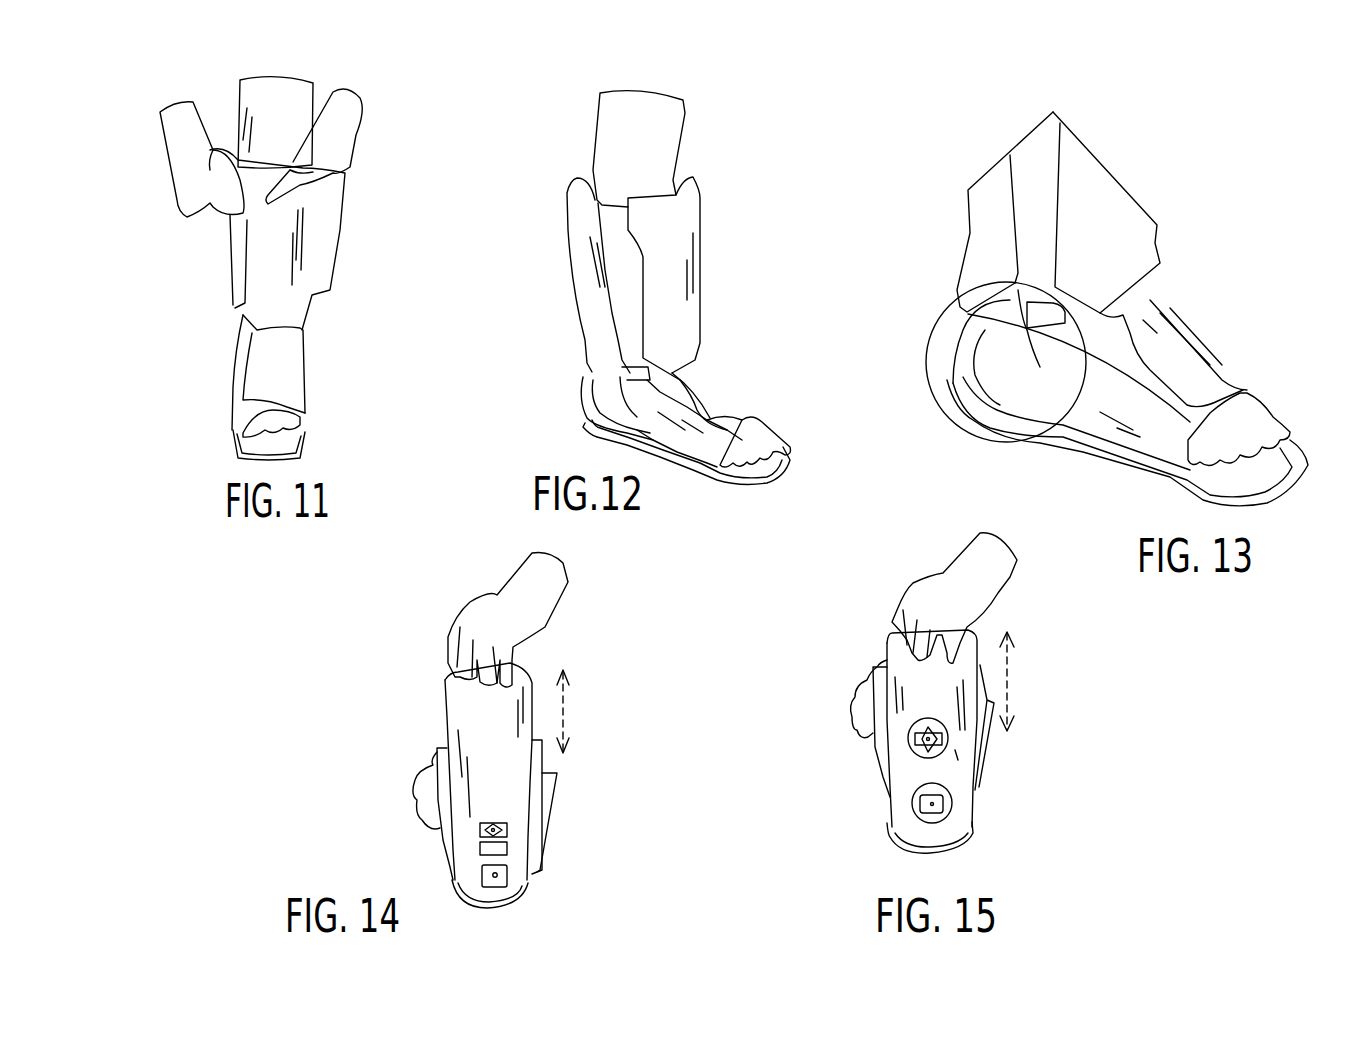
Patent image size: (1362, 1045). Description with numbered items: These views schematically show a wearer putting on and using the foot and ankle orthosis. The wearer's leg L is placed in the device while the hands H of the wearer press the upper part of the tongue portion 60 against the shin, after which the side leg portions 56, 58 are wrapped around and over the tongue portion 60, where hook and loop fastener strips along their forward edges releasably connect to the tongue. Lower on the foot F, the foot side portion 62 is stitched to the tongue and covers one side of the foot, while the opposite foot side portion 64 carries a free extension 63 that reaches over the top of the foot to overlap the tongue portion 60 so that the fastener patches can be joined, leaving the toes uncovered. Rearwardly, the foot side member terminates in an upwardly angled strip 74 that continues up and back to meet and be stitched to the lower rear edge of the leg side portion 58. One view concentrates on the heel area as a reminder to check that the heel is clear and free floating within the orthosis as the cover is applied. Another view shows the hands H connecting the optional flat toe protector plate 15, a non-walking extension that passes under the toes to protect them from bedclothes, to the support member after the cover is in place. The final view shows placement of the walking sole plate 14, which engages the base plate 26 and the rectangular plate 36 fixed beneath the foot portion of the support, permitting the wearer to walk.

In FIG. 11, the leg L is at (300, 105).
In FIG. 12, the leg L is at (647, 148).
In FIG. 13, the leg L is at (1058, 212).
In FIG. 11, the hands H is at (335, 137).
In FIG. 14, the hands H is at (508, 610).
In FIG. 15, the hands H is at (937, 593).
In FIG. 11, the foot F is at (287, 425).
In FIG. 12, the foot F is at (753, 432).
In FIG. 13, the foot F is at (1230, 417).
In FIG. 12, the sole or walker plate 14 is at (593, 420).
In FIG. 13, the sole or walker plate 14 is at (1117, 394).
In FIG. 15, the sole or walker plate 14 is at (893, 735).
In FIG. 14, the flat toe protector plate 15 is at (500, 712).
In FIG. 15, the base plate 26 is at (942, 742).
In FIG. 15, the rectangular plate 36 is at (943, 807).
In FIG. 11, the side leg portion 56 is at (323, 213).
In FIG. 12, the side leg portion 56 is at (688, 200).
In FIG. 11, the side leg portion 58 is at (237, 237).
In FIG. 12, the side leg portion 58 is at (585, 273).
In FIG. 11, the tongue portion 60 is at (287, 268).
In FIG. 12, the foot side portion 62 is at (688, 443).
In FIG. 14, the foot side portion 62 is at (448, 827).
In FIG. 11, the free extension 63 is at (275, 357).
In FIG. 12, the free extension 63 is at (710, 407).
In FIG. 13, the free extension 63 is at (1170, 362).
In FIG. 14, the foot side portion 64 is at (533, 808).
In FIG. 12, the upwardly angled strip 74 is at (645, 365).